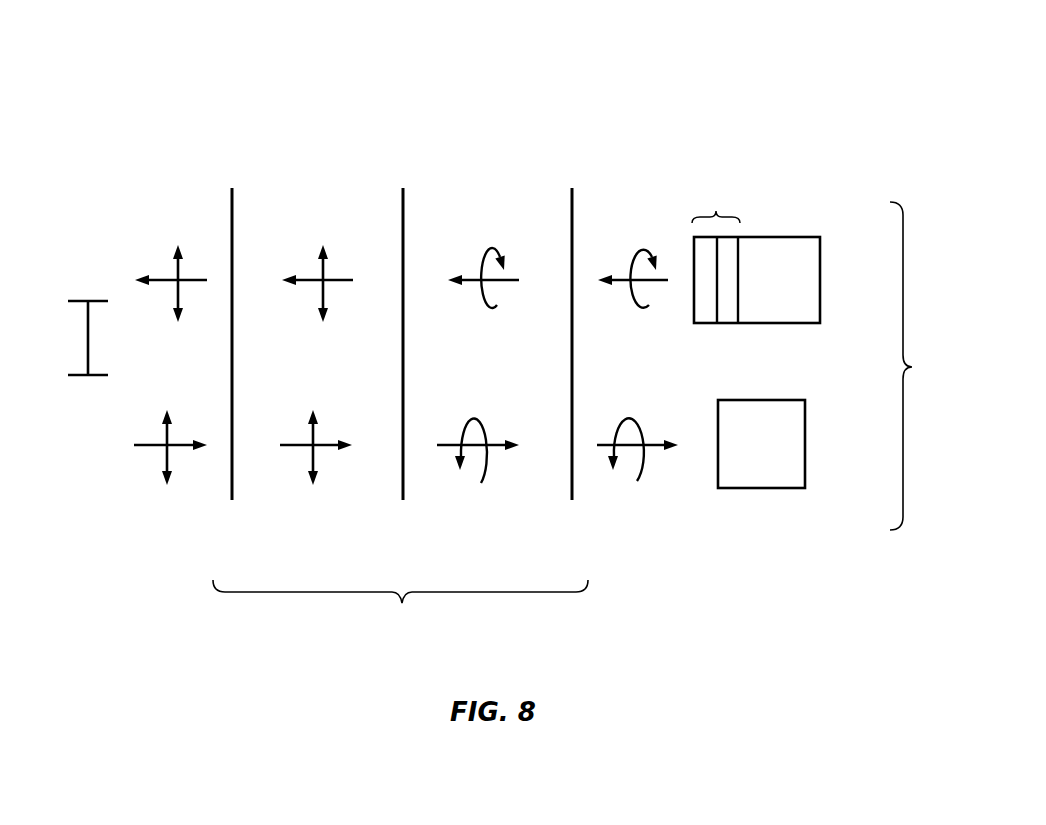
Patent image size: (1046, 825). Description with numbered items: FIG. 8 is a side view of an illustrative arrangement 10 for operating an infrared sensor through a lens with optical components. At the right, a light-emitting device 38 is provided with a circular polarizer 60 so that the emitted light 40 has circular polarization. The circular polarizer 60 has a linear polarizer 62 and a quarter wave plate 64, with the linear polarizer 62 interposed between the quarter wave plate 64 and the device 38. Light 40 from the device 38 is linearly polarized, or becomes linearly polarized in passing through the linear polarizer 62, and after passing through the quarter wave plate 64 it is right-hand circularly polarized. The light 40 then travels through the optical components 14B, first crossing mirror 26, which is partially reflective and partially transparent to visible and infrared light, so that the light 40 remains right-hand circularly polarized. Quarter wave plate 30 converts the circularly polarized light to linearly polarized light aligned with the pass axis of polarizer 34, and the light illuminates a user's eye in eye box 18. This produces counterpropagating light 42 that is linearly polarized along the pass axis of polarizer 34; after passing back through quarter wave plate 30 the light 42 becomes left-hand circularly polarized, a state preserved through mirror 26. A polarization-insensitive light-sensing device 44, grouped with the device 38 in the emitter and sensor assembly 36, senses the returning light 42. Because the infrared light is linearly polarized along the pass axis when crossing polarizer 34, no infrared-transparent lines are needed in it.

The optical system 10 is at (833, 84).
The eye box 18 is at (80, 376).
The polarizer 34 is at (232, 199).
The quarter wave plate 30 is at (403, 199).
The mirror 26 is at (572, 199).
The emitted light 40 is at (193, 282).
The counterpropagating light 42 is at (145, 447).
The light-emitting device 38 is at (788, 248).
The quarter wave plate 64 is at (705, 315).
The linear polarizer 62 is at (730, 313).
The circular polarizer 60 is at (716, 208).
The light-sensing device 44 is at (762, 490).
The display assembly 36 is at (916, 366).
The optical stack 14B is at (400, 608).